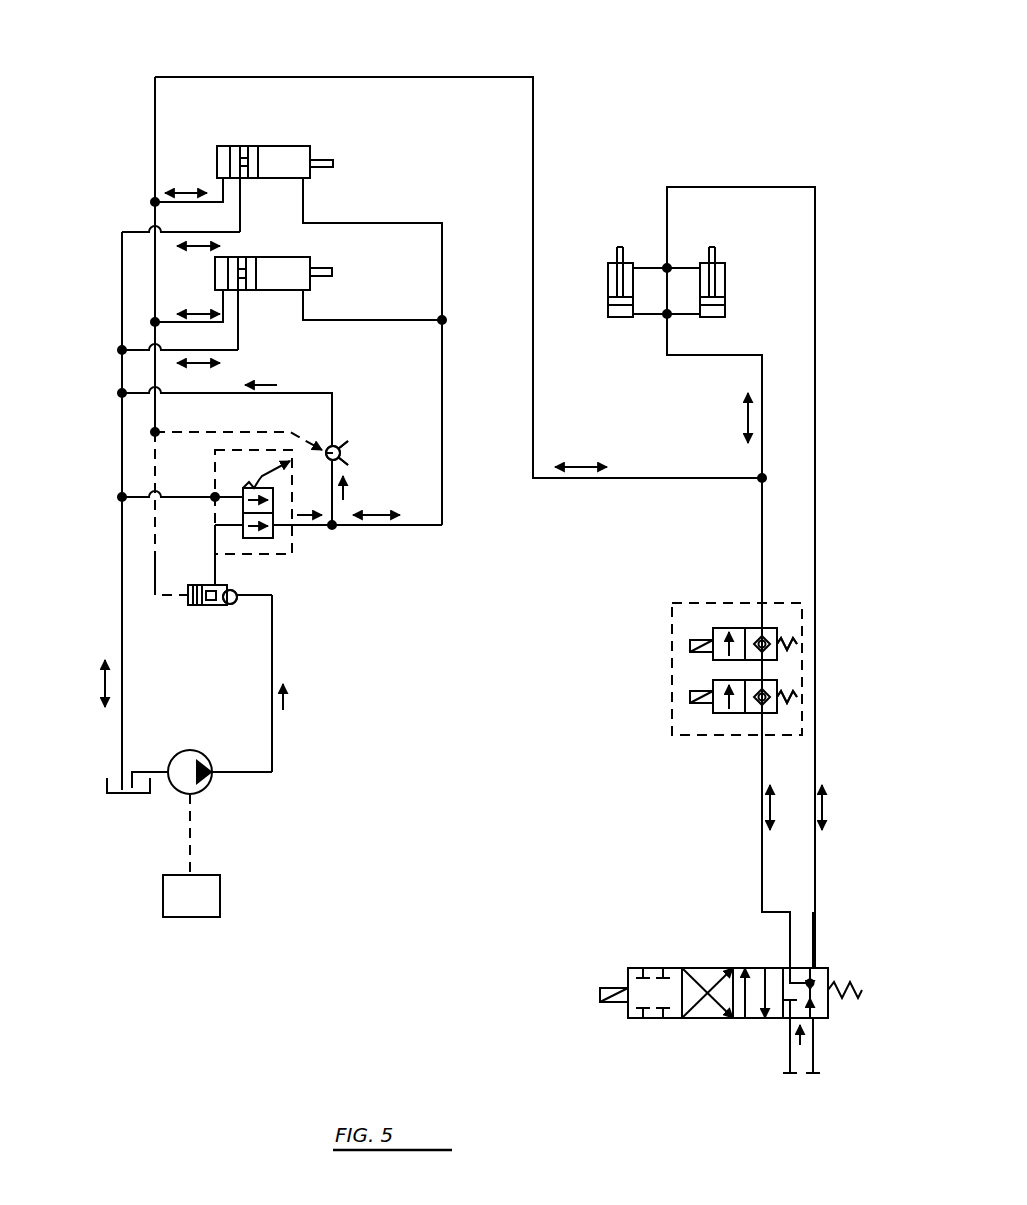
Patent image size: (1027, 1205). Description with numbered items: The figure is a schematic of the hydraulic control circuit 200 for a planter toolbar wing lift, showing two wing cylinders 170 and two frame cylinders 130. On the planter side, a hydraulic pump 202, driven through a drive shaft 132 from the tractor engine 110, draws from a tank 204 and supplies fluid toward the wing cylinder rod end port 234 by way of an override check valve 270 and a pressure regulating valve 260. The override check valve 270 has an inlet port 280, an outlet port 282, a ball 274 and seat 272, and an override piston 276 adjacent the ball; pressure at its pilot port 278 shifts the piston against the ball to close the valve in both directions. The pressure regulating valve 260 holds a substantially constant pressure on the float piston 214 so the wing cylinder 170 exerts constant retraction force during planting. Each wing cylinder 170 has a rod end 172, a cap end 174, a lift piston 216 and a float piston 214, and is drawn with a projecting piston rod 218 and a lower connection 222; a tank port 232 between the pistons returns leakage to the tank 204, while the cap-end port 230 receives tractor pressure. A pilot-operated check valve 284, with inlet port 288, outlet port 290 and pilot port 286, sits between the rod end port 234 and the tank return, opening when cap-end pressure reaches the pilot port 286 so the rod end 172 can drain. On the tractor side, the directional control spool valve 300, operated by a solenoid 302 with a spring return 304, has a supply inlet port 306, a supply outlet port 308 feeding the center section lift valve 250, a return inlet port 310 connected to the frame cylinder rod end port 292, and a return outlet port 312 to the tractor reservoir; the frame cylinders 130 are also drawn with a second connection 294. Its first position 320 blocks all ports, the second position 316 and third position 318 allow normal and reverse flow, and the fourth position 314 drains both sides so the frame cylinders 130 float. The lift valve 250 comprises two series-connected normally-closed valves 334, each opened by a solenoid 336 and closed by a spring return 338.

The hydraulic control circuit 200 is at (153, 68).
The wing cylinder 170 is at (308, 133).
The rod end 172 is at (322, 152).
The cap end 174 is at (212, 162).
The float piston 214 is at (248, 148).
The lift piston 216 is at (222, 146).
The piston rod 218 is at (333, 166).
The hydraulic line 222 is at (262, 178).
The cap-end port 230 is at (216, 291).
The tank port 232 is at (243, 290).
The rod end port 234 is at (305, 290).
The outlet port 290 is at (338, 446).
The pilot-operated check valve 284 is at (347, 453).
The pilot port 286 is at (322, 455).
The inlet port 288 is at (340, 461).
The pressure regulating valve 260 is at (236, 510).
The override check valve 270 is at (190, 583).
The seat 272 is at (232, 605).
The ball 274 is at (216, 607).
The override piston 276 is at (203, 607).
The override piston pilot port 278 is at (190, 600).
The inlet port 280 is at (238, 600).
The outlet port 282 is at (225, 583).
The hydraulic pump 202 is at (208, 788).
The tank 204 is at (107, 788).
The drive shaft 132 is at (194, 840).
The engine 110 is at (221, 898).
The frame cylinder 130 is at (608, 266).
The rod end port 292 is at (636, 266).
The hydraulic line 294 is at (703, 318).
The center section lift valve 250 is at (668, 740).
The solenoid-operated normally-closed valve 334 is at (718, 628).
The solenoid 336 is at (697, 640).
The spring return 338 is at (790, 640).
The directional control spool valve 300 is at (700, 1062).
The solenoid 302 is at (608, 988).
The spring return 304 is at (862, 990).
The supply inlet port 306 is at (788, 1020).
The supply outlet port 308 is at (788, 966).
The return inlet port 310 is at (816, 968).
The return outlet port 312 is at (815, 1020).
The fourth position 314 is at (800, 1047).
The second position 316 is at (757, 1022).
The third position 318 is at (690, 1022).
The first position 320 is at (640, 1022).